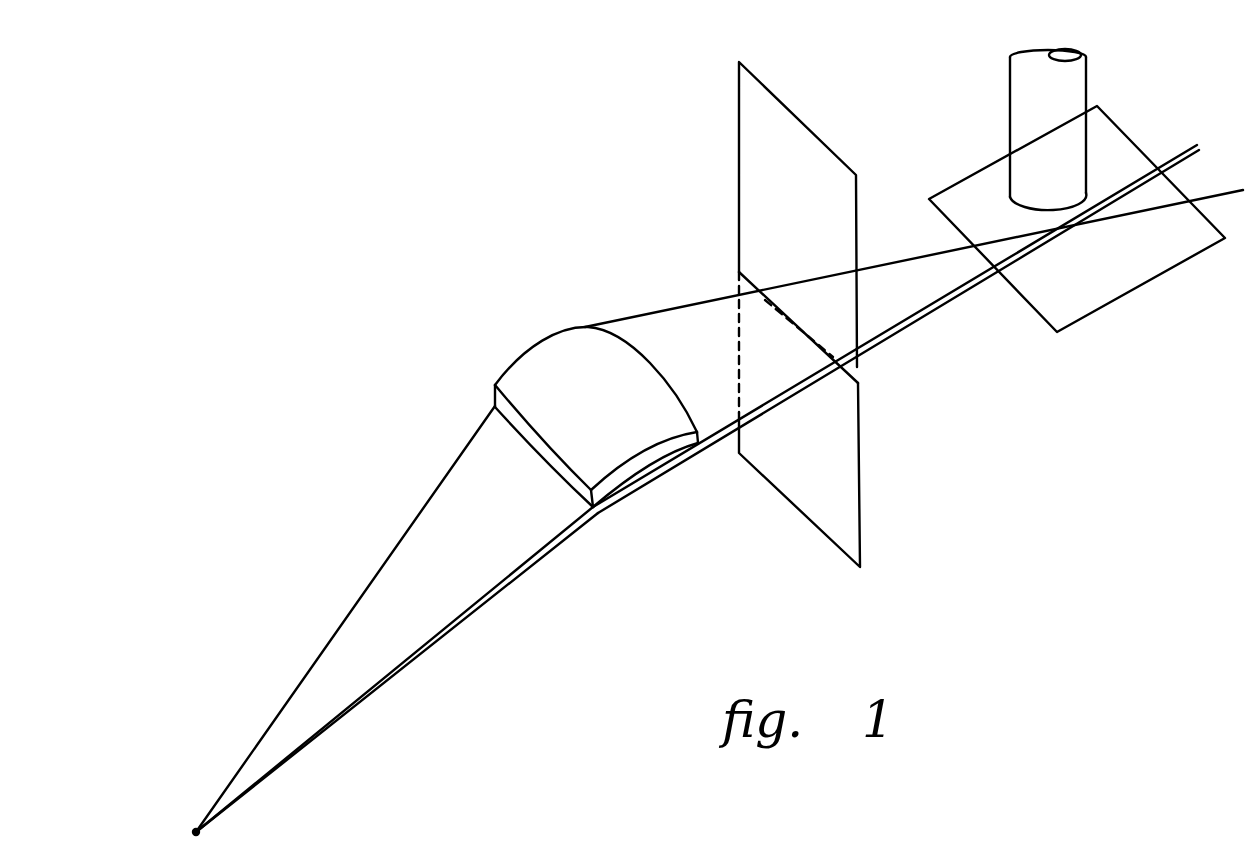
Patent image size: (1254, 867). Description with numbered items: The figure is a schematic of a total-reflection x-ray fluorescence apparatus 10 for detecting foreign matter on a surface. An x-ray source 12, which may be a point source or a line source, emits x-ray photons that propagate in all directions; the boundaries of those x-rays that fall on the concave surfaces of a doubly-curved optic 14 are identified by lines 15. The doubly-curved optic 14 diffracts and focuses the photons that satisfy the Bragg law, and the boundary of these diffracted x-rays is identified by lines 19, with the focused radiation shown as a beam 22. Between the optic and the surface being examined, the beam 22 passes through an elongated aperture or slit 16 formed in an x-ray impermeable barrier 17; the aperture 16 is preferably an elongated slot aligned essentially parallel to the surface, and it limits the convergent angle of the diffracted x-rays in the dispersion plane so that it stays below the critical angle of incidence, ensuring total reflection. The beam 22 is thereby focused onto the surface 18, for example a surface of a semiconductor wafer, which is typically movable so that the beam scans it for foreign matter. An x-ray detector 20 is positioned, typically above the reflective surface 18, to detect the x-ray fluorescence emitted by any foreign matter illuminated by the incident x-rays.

The total-reflection x-ray fluorescence apparatus 10 is at (318, 376).
The x-ray source 12 is at (195, 833).
The doubly-curved optic 14 is at (598, 373).
The lines 15 is at (360, 597).
The aperture 16 is at (740, 258).
The x-ray impermeable barrier 17 is at (800, 140).
The surface 18 is at (1127, 282).
The lines 19 is at (622, 313).
The x-ray detector 20 is at (1010, 97).
The beam 22 is at (917, 310).